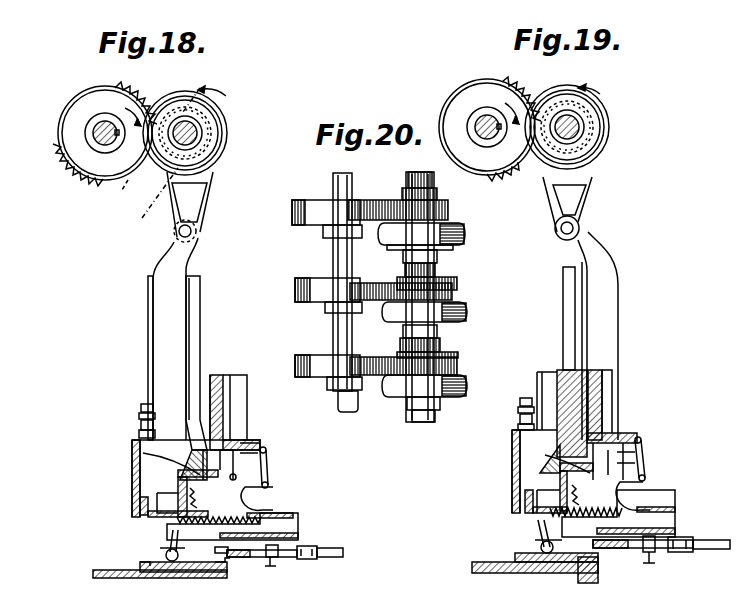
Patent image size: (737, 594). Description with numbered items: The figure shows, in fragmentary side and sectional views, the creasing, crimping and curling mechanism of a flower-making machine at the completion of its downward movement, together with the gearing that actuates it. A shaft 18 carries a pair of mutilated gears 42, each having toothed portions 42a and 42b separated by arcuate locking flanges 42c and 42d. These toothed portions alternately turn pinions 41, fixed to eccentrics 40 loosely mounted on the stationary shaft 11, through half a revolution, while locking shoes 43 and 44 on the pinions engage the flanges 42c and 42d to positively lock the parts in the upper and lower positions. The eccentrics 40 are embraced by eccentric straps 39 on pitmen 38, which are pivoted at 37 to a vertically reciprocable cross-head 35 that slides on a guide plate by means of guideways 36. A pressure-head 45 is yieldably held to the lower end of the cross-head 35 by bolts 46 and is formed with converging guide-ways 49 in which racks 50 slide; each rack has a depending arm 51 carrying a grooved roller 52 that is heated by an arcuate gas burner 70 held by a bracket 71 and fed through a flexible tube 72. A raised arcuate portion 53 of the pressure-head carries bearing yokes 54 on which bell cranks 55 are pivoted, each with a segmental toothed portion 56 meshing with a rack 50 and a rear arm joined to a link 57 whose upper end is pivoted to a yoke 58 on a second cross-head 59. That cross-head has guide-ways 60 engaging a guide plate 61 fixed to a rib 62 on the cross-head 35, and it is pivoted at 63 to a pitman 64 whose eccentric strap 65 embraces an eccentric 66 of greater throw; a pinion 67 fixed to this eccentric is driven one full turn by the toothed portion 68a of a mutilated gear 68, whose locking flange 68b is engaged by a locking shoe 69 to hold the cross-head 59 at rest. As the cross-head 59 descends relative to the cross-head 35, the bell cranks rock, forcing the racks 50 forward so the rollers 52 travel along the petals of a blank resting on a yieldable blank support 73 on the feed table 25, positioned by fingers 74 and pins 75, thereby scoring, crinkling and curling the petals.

In FIG. 18, the stationary shaft 11 is at (196, 123).
In FIG. 19, the stationary shaft 11 is at (575, 118).
In FIG. 20, the stationary shaft 11 is at (418, 422).
In FIG. 18, the shaft 18 is at (98, 123).
In FIG. 19, the shaft 18 is at (478, 122).
In FIG. 20, the shaft 18 is at (348, 413).
In FIG. 18, the feed table 25 is at (105, 572).
In FIG. 19, the feed table 25 is at (495, 565).
In FIG. 18, the cross-head 35 is at (152, 371).
In FIG. 19, the cross-head 35 is at (520, 461).
In FIG. 19, the guideways 36 is at (558, 372).
In FIG. 18, the pivotal connection 37 is at (179, 234).
In FIG. 18, the pitmen 38 is at (197, 201).
In FIG. 18, the eccentric straps 39 is at (224, 147).
In FIG. 18, the eccentrics 40 is at (208, 165).
In FIG. 19, the eccentrics 40 is at (522, 487).
In FIG. 18, the pinions 41 is at (148, 200).
In FIG. 20, the pinions 41 is at (450, 222).
In FIG. 20, the mutilated gears 42 is at (322, 200).
In FIG. 18, the toothed portion 42a is at (75, 183).
In FIG. 18, the toothed portion 42b is at (147, 95).
In FIG. 20, the toothed portion 42b is at (378, 200).
In FIG. 18, the arcuate locking flange 42c is at (60, 140).
In FIG. 20, the arcuate locking flange 42c is at (330, 385).
In FIG. 18, the arcuate locking flange 42d is at (129, 178).
In FIG. 18, the locking shoe 43 is at (210, 137).
In FIG. 20, the locking shoe 43 is at (437, 195).
In FIG. 18, the locking shoe 44 is at (199, 90).
In FIG. 20, the locking shoe 44 is at (412, 176).
In FIG. 18, the pressure-head 45 is at (140, 505).
In FIG. 19, the pressure-head 45 is at (514, 504).
In FIG. 18, the bolts 46 is at (139, 410).
In FIG. 19, the bolts 46 is at (518, 402).
In FIG. 18, the guide-ways 49 is at (299, 528).
In FIG. 19, the guide-ways 49 is at (676, 520).
In FIG. 18, the racks 50 is at (172, 532).
In FIG. 19, the racks 50 is at (540, 528).
In FIG. 18, the depending arm 51 is at (160, 547).
In FIG. 19, the depending arm 51 is at (540, 541).
In FIG. 18, the grooved roller 52 is at (166, 556).
In FIG. 19, the grooved roller 52 is at (553, 547).
In FIG. 18, the raised arcuate portion 53 is at (150, 455).
In FIG. 19, the raised arcuate portion 53 is at (545, 452).
In FIG. 18, the bearing yokes 54 is at (266, 448).
In FIG. 19, the bearing yokes 54 is at (640, 458).
In FIG. 18, the bell cranks 55 is at (238, 479).
In FIG. 19, the bell cranks 55 is at (646, 480).
In FIG. 18, the segmental toothed portion 56 is at (262, 493).
In FIG. 19, the segmental toothed portion 56 is at (615, 500).
In FIG. 18, the links 57 is at (268, 466).
In FIG. 19, the links 57 is at (646, 450).
In FIG. 18, the yokes 58 is at (264, 447).
In FIG. 19, the yokes 58 is at (640, 437).
In FIG. 18, the cross-head 59 is at (247, 393).
In FIG. 19, the cross-head 59 is at (603, 380).
In FIG. 19, the guide-ways 60 is at (566, 317).
In FIG. 18, the guide plate 61 is at (193, 302).
In FIG. 19, the guide plate 61 is at (600, 372).
In FIG. 19, the rib 62 is at (590, 370).
In FIG. 19, the pivotal connection 63 is at (580, 229).
In FIG. 19, the pitman 64 is at (580, 198).
In FIG. 19, the eccentric strap 65 is at (598, 133).
In FIG. 20, the eccentric strap 65 is at (467, 312).
In FIG. 19, the eccentric 66 is at (595, 147).
In FIG. 20, the eccentric 66 is at (450, 292).
In FIG. 19, the pinion 67 is at (563, 114).
In FIG. 20, the pinion 67 is at (437, 272).
In FIG. 19, the mutilated gear 68 is at (478, 88).
In FIG. 20, the mutilated gear 68 is at (312, 303).
In FIG. 19, the toothed portion 68a is at (510, 80).
In FIG. 20, the toothed portion 68a is at (378, 305).
In FIG. 19, the arcuate locking flange 68b is at (458, 92).
In FIG. 20, the arcuate locking flange 68b is at (320, 282).
In FIG. 19, the locking shoe 69 is at (596, 124).
In FIG. 20, the locking shoe 69 is at (455, 278).
In FIG. 18, the arcuate gas burner 70 is at (250, 560).
In FIG. 19, the arcuate gas burner 70 is at (635, 550).
In FIG. 18, the bracket 71 is at (278, 560).
In FIG. 19, the bracket 71 is at (656, 553).
In FIG. 18, the flexible tube 72 is at (335, 558).
In FIG. 19, the flexible tube 72 is at (710, 550).
In FIG. 18, the blank supports 73 is at (205, 573).
In FIG. 19, the blank supports 73 is at (600, 565).
In FIG. 18, the petal positioning fingers 74 is at (210, 566).
In FIG. 19, the petal positioning fingers 74 is at (570, 573).
In FIG. 18, the blank positioning pins 75 is at (145, 577).
In FIG. 19, the blank positioning pins 75 is at (500, 573).